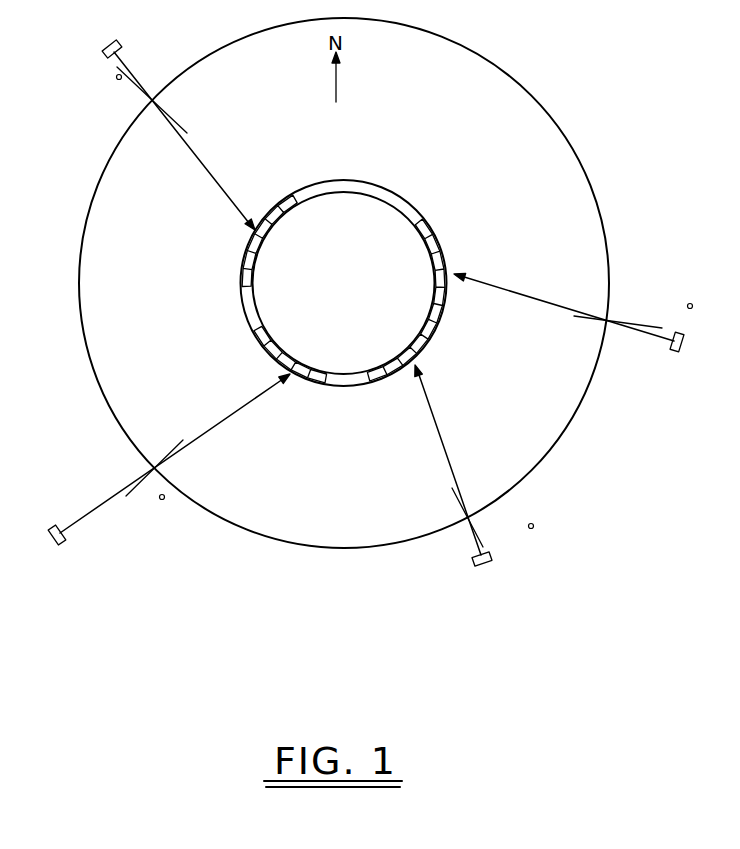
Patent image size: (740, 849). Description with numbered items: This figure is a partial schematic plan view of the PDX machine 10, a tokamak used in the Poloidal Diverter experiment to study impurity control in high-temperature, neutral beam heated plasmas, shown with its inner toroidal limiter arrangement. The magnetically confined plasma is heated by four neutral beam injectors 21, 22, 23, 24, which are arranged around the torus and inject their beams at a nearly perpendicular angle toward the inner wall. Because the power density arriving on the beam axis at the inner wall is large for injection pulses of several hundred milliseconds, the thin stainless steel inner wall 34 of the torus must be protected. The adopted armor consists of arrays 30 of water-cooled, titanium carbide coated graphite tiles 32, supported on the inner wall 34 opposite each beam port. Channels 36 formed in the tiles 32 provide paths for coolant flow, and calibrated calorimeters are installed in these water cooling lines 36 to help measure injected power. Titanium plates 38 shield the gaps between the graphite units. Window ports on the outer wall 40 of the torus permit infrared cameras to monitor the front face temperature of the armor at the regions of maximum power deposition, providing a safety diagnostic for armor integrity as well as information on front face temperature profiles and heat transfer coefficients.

The PDX machine 10 is at (488, 50).
The neutral beam injector 21 is at (118, 38).
The neutral beam injector 22 is at (673, 351).
The neutral beam injector 23 is at (470, 558).
The neutral beam injector 24 is at (48, 524).
The arrays 30 is at (253, 241).
The graphite tiles 32 is at (438, 323).
The inner wall 34 is at (330, 370).
The channels 36 is at (344, 283).
The titanium plates 38 is at (339, 278).
The outer wall 40 is at (257, 528).